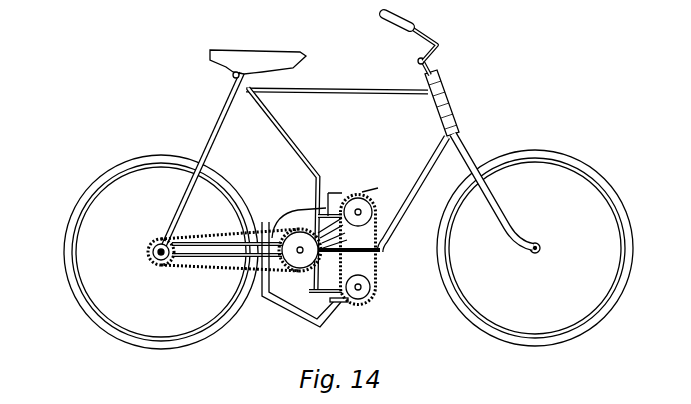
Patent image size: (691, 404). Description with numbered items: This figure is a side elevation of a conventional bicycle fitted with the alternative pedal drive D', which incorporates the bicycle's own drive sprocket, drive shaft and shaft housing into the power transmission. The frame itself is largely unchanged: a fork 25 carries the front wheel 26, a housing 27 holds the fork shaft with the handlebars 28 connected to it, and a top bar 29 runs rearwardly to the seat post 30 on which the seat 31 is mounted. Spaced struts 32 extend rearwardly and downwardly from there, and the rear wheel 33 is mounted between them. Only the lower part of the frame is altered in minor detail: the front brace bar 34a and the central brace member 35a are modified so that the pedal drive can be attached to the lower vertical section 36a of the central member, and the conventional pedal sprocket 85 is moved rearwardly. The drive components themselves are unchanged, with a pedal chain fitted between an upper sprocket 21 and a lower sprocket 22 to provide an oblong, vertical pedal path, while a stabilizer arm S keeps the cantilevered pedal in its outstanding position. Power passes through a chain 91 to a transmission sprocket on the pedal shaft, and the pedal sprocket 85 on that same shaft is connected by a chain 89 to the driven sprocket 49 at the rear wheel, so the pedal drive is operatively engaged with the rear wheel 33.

The upper sprocket 21 is at (368, 199).
The lower sprocket 22 is at (357, 299).
The fork 25 is at (477, 149).
The front wheel 26 is at (555, 152).
The housing 27 is at (451, 102).
The handlebars 28 is at (430, 33).
The top bar 29 is at (364, 89).
The seat post 30 is at (231, 76).
The seat 31 is at (212, 48).
The struts 32 is at (233, 122).
The rear wheel 33 is at (92, 186).
The front brace bar 34a is at (433, 153).
The central brace member 35a is at (281, 124).
The lower vertical section 36a is at (329, 192).
The driven sprocket 49 is at (152, 253).
The pedal sprocket 85 is at (298, 258).
The chain 89 is at (230, 208).
The chain 91 is at (297, 217).
The stabilizer arm S is at (308, 328).
The pedal drive D' is at (389, 261).